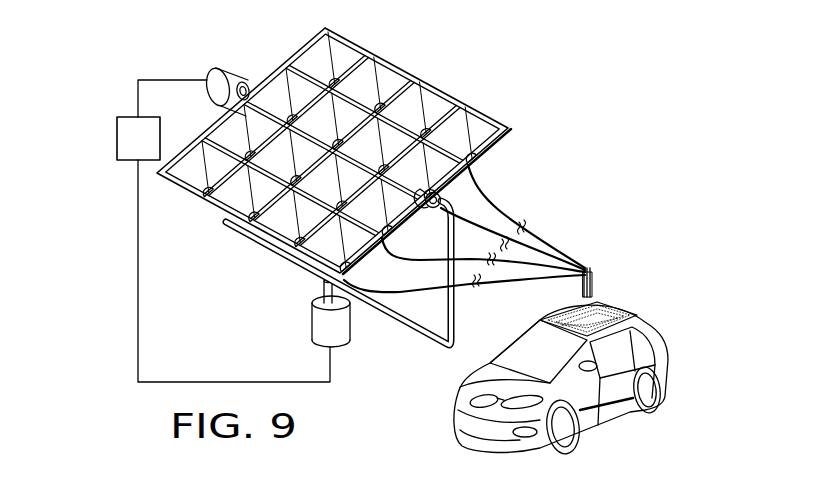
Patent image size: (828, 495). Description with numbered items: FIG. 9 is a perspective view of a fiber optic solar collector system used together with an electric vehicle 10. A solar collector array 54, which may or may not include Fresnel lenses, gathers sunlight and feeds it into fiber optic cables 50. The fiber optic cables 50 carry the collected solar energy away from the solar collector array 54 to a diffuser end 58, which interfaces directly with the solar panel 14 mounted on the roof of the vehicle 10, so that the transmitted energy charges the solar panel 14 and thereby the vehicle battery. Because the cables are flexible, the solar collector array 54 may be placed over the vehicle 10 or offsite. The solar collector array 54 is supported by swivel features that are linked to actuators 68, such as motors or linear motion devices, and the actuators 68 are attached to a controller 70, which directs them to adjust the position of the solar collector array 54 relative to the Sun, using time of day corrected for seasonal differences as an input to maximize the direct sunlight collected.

The electric vehicle 10 is at (671, 354).
The solar panel 14 is at (607, 313).
The fiber optic cables 50 is at (545, 237).
The solar collector array 54 is at (425, 83).
The diffuser end 58 is at (597, 280).
The actuators 68 is at (235, 72).
The controller 70 is at (117, 138).